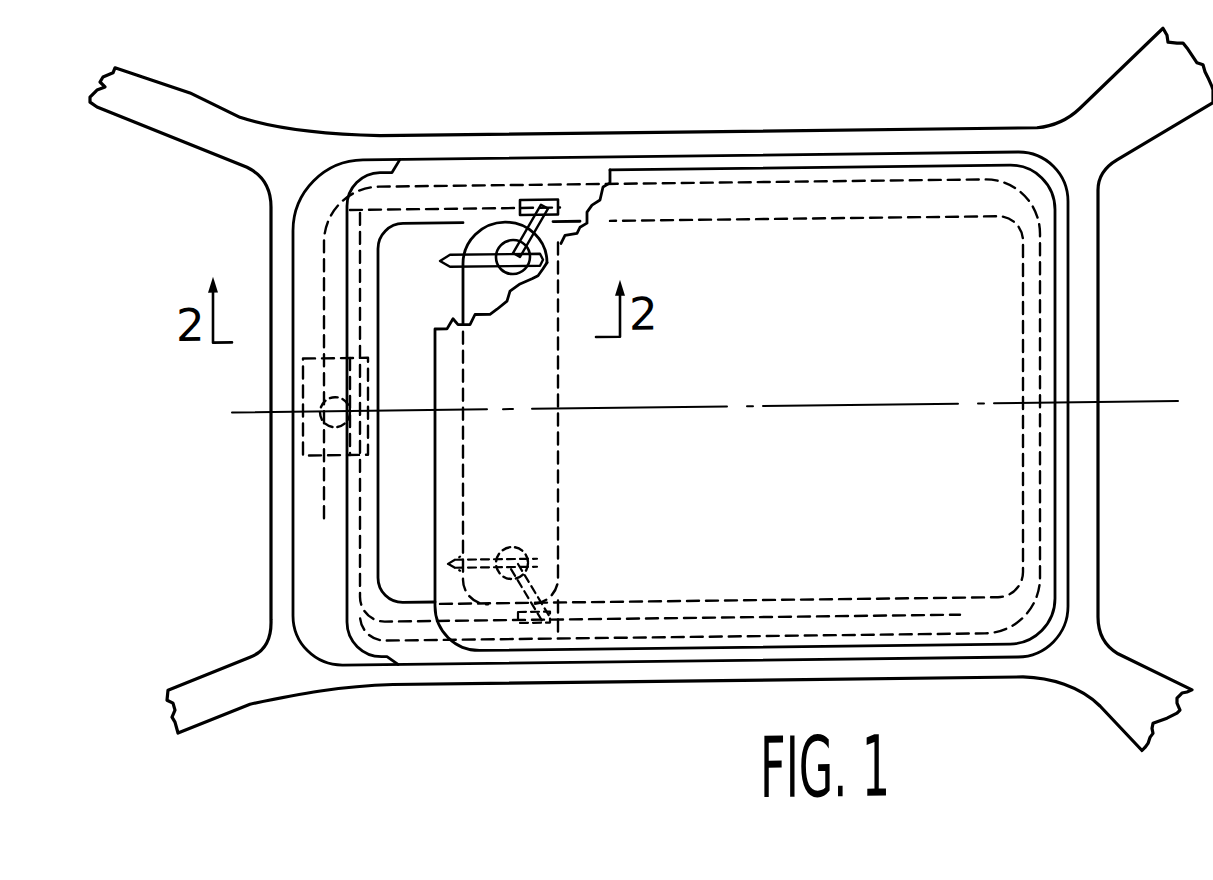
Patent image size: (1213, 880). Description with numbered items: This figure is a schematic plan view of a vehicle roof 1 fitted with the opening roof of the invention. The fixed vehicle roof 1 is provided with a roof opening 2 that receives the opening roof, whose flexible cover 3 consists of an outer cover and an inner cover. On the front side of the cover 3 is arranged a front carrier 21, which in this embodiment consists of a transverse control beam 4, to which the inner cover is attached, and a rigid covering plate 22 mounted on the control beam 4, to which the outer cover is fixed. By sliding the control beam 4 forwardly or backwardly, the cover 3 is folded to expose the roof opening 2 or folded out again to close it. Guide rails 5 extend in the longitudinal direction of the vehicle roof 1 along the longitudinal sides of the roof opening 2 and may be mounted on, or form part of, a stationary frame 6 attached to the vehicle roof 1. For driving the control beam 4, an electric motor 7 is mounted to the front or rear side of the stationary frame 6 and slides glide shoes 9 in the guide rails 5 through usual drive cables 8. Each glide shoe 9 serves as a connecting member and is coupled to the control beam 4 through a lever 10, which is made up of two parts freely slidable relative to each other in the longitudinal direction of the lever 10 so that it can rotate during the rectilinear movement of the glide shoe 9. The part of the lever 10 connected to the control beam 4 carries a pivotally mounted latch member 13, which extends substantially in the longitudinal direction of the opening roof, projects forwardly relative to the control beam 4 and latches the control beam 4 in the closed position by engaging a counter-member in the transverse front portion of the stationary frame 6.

The vehicle roof 1 is at (490, 144).
The roof opening 2 is at (762, 195).
The flexible cover 3 is at (825, 240).
The control beam 4 is at (478, 238).
The guide rails 5 is at (922, 206).
The stationary frame 6 is at (985, 167).
The electric motor 7 is at (303, 384).
The drive cables 8 is at (352, 564).
The glide shoe 9 is at (546, 216).
The lever 10 is at (527, 197).
The latch member 13 is at (445, 255).
The front carrier 21 is at (501, 650).
The covering plate 22 is at (548, 627).